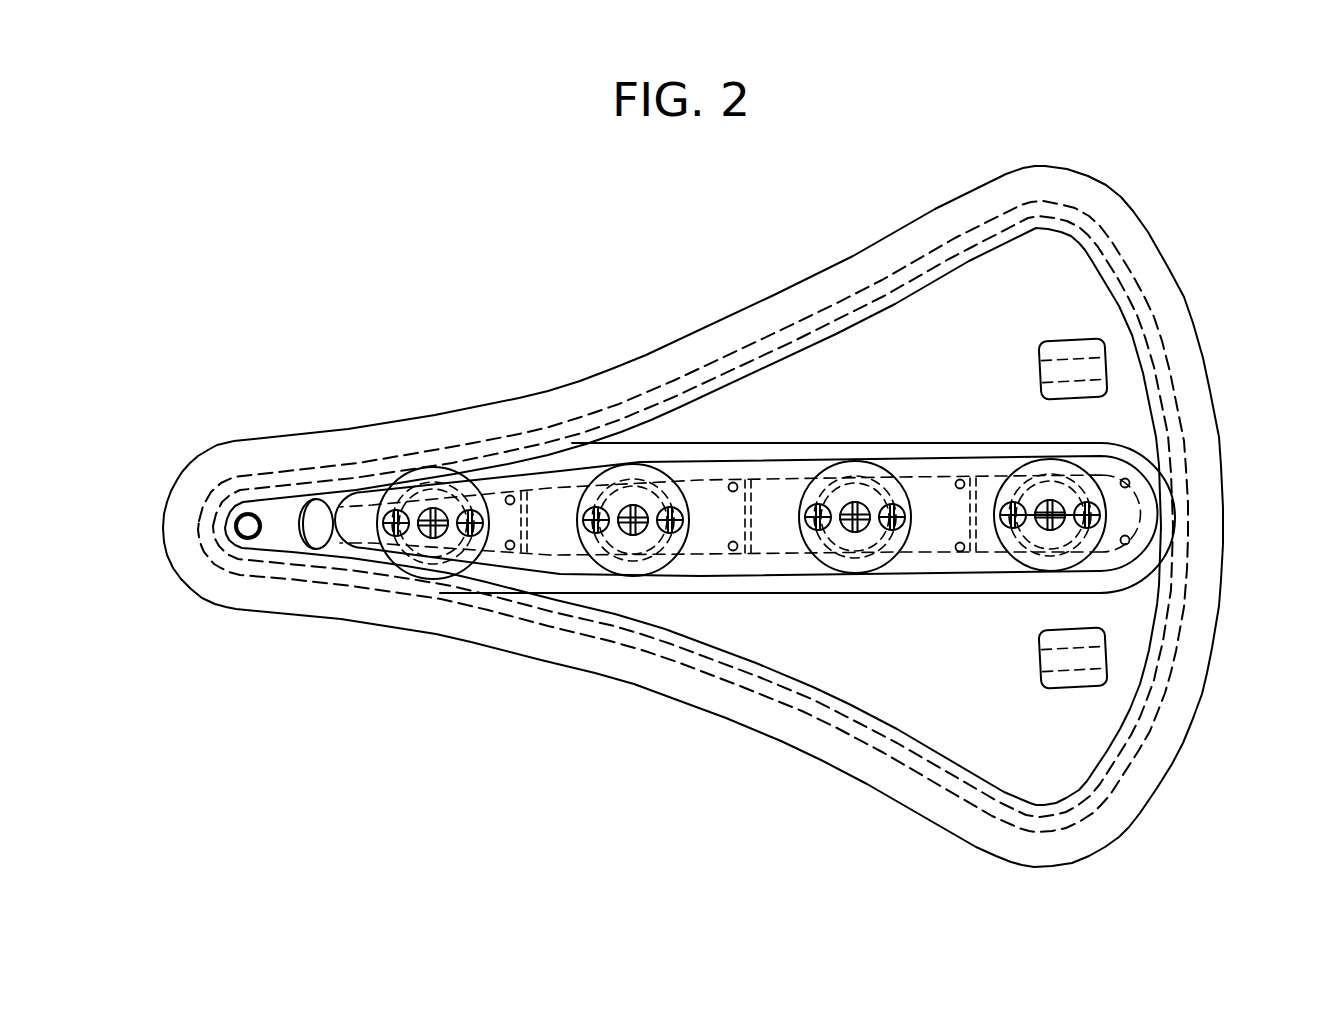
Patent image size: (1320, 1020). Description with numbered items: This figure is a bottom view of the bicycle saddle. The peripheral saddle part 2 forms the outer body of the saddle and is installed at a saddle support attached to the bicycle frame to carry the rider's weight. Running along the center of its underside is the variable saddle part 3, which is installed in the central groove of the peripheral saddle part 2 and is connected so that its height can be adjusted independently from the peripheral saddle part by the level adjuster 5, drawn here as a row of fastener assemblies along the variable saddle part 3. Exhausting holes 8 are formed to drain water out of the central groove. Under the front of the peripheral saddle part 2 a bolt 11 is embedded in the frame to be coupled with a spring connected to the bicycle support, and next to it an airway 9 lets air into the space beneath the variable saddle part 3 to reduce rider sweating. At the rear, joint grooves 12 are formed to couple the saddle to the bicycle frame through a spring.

The peripheral saddle part 2 is at (1146, 256).
The variable saddle part 3 is at (768, 505).
The level adjuster 5 is at (868, 492).
The exhausting holes 8 is at (733, 483).
The airway 9 is at (307, 528).
The bolt 11 is at (247, 514).
The joint grooves 12 is at (1048, 368).